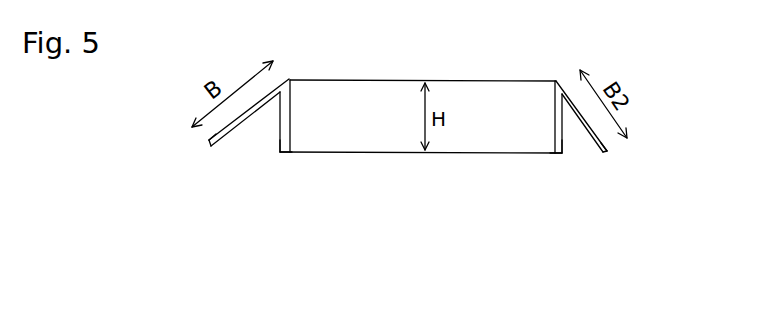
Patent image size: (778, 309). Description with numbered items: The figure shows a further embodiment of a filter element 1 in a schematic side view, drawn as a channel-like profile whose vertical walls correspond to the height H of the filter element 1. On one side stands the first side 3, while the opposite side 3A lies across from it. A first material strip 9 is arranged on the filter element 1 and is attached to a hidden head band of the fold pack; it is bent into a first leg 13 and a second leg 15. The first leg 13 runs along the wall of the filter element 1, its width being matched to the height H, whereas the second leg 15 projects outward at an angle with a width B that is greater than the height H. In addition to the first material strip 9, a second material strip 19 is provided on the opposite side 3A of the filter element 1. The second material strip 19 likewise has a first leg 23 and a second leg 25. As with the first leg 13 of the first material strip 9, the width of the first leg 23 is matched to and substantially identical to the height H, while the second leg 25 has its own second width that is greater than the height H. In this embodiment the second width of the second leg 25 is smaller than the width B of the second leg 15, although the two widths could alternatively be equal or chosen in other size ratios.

The filter element 1 is at (500, 193).
The first side 3 is at (298, 117).
The opposite side 3A is at (546, 125).
The material strip 9 is at (253, 153).
The first leg 13 is at (280, 153).
The second leg 15 is at (212, 148).
The second material strip 19 is at (578, 157).
The first leg 23 is at (556, 153).
The second leg 25 is at (605, 151).